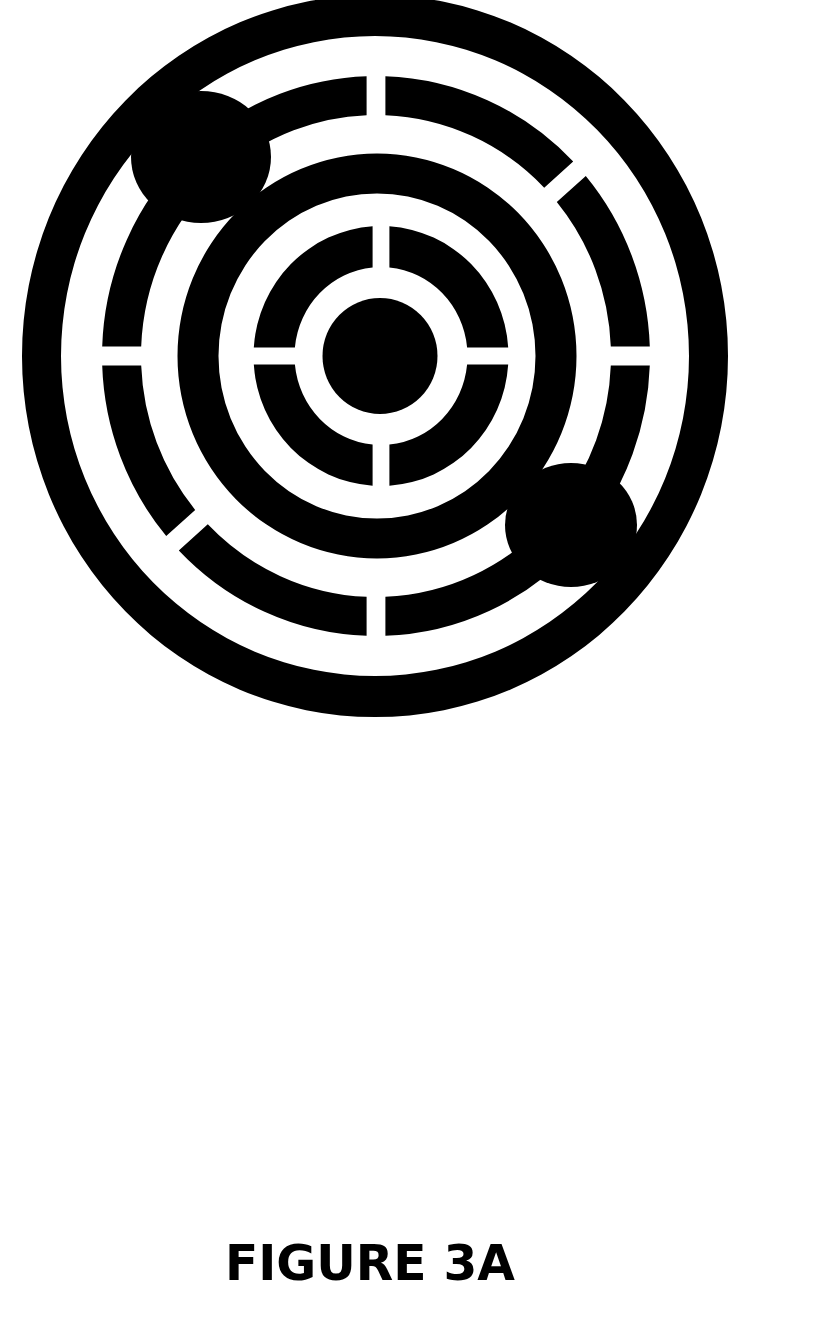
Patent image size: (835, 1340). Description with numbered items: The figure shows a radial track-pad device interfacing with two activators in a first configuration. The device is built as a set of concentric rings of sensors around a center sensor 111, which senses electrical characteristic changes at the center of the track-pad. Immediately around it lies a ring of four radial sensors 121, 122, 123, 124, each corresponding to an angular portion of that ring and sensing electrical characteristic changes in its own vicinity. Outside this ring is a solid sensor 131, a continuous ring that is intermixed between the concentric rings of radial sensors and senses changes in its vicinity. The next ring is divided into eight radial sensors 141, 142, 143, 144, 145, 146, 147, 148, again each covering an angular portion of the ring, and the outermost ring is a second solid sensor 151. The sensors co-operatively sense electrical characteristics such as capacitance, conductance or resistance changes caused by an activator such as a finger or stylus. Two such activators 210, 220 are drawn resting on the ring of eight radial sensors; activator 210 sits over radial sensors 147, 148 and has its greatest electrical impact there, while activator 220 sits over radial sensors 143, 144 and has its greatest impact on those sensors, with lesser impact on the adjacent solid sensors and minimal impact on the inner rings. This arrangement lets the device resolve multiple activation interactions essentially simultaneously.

The center sensor 111 is at (430, 315).
The radial sensor 121 is at (328, 228).
The radial sensor 122 is at (480, 267).
The radial sensor 123 is at (457, 470).
The radial sensor 124 is at (290, 450).
The solid sensor 131 is at (465, 168).
The radial sensor 141 is at (515, 105).
The radial sensor 142 is at (643, 277).
The radial sensor 143 is at (633, 467).
The radial sensor 144 is at (470, 627).
The radial sensor 145 is at (242, 605).
The radial sensor 146 is at (107, 420).
The radial sensor 147 is at (125, 233).
The radial sensor 148 is at (307, 82).
The solid sensor 151 is at (723, 288).
The activator 210 is at (201, 157).
The activator 220 is at (571, 525).